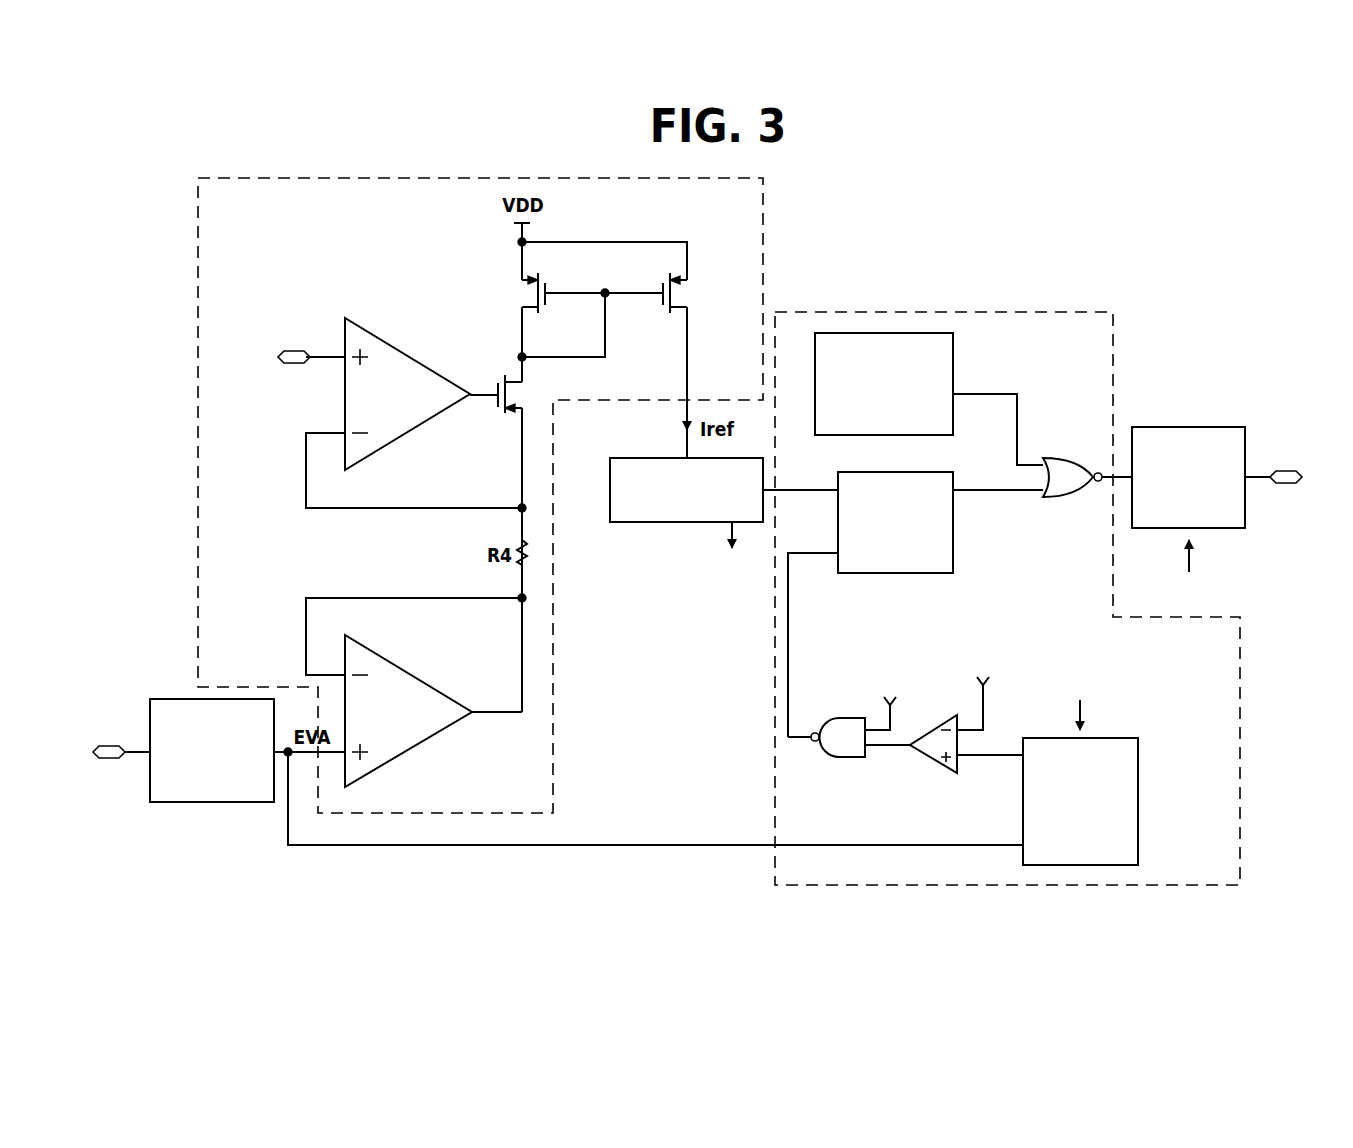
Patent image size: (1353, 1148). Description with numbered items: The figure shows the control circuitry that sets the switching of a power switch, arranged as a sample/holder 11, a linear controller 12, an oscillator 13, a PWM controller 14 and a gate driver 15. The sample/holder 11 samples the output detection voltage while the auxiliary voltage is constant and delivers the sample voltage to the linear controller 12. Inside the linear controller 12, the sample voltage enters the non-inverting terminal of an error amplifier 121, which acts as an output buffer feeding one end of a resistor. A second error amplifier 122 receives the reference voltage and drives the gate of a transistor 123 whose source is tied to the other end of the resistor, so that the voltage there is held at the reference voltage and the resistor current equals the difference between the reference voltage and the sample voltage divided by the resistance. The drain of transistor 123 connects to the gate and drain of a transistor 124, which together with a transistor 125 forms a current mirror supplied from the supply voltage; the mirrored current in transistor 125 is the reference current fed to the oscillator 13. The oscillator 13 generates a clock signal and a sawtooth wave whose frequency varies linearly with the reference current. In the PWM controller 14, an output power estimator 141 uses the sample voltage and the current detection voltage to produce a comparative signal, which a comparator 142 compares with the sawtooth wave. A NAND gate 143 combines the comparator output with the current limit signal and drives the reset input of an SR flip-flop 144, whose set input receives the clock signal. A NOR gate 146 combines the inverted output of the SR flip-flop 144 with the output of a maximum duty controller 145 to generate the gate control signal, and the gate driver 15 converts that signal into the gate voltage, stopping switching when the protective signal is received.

The sample/holder 11 is at (200, 802).
The linear controller 12 is at (763, 217).
The oscillator 13 is at (637, 522).
The PWM controller 14 is at (962, 312).
The gate driver 15 is at (1189, 427).
The error amplifier 121 is at (415, 664).
The error amplifier 122 is at (413, 350).
The transistor 123 is at (512, 392).
The transistor 124 is at (538, 271).
The transistor 125 is at (684, 290).
The output power estimator 141 is at (1138, 803).
The comparator 142 is at (932, 764).
The NAND gate 143 is at (842, 718).
The SR flip-flop 144 is at (953, 547).
The maximum duty controller 145 is at (953, 352).
The NOR gate 146 is at (1060, 458).